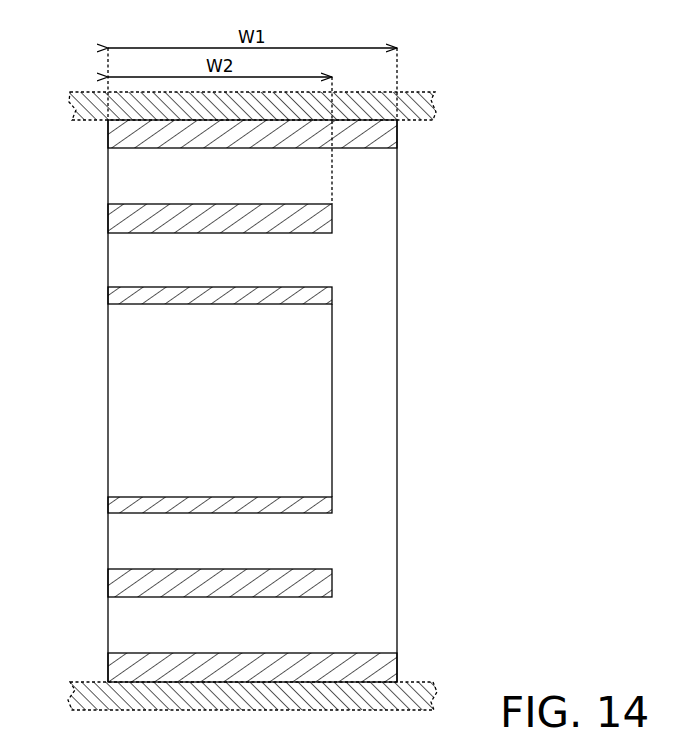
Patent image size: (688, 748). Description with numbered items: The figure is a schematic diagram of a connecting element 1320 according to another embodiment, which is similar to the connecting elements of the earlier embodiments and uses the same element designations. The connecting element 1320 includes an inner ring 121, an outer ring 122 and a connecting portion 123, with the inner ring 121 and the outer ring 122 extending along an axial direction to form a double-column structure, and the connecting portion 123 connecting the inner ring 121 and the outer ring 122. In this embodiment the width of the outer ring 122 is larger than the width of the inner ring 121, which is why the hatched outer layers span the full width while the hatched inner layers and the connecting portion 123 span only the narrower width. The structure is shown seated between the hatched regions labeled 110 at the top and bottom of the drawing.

The substrate 110 is at (372, 107).
The connecting element 1320 is at (80, 260).
The outer ring 122 is at (385, 134).
The connecting portion 123 is at (330, 213).
The inner ring 121 is at (325, 296).